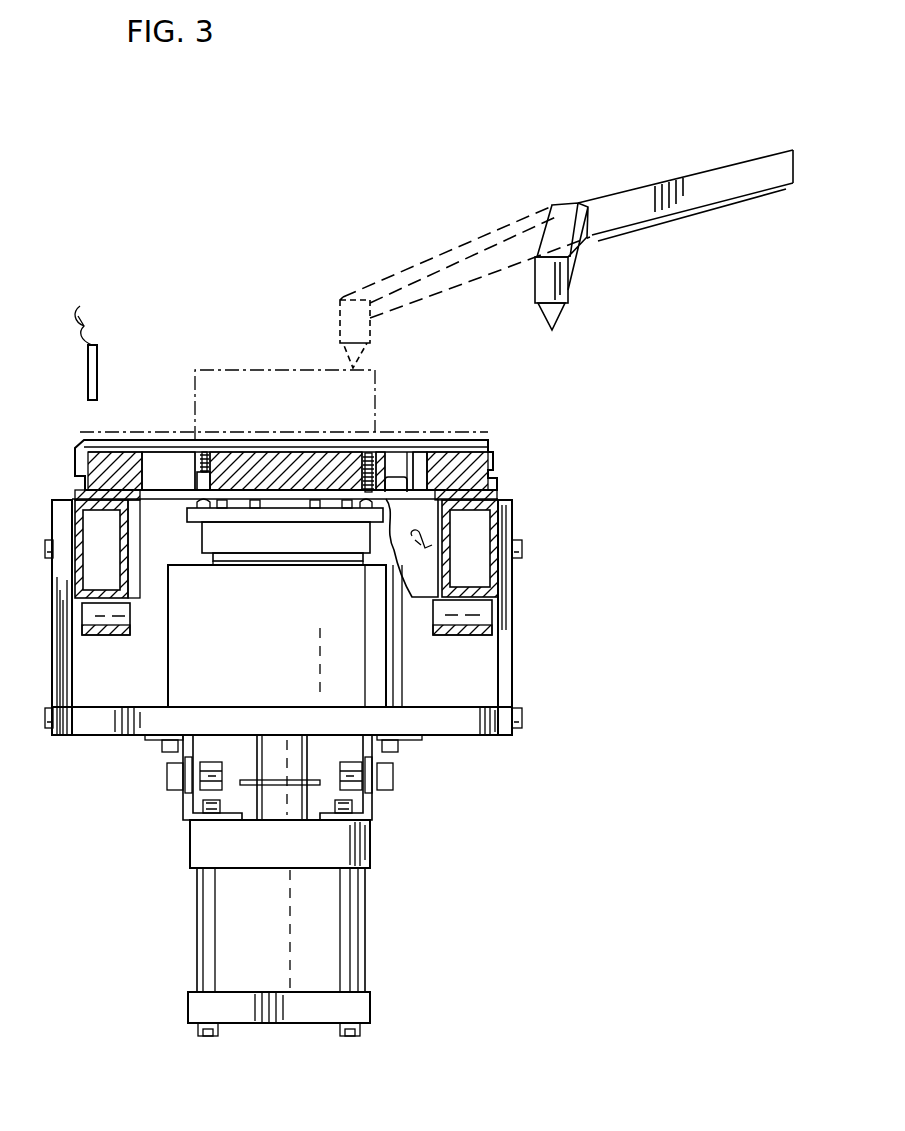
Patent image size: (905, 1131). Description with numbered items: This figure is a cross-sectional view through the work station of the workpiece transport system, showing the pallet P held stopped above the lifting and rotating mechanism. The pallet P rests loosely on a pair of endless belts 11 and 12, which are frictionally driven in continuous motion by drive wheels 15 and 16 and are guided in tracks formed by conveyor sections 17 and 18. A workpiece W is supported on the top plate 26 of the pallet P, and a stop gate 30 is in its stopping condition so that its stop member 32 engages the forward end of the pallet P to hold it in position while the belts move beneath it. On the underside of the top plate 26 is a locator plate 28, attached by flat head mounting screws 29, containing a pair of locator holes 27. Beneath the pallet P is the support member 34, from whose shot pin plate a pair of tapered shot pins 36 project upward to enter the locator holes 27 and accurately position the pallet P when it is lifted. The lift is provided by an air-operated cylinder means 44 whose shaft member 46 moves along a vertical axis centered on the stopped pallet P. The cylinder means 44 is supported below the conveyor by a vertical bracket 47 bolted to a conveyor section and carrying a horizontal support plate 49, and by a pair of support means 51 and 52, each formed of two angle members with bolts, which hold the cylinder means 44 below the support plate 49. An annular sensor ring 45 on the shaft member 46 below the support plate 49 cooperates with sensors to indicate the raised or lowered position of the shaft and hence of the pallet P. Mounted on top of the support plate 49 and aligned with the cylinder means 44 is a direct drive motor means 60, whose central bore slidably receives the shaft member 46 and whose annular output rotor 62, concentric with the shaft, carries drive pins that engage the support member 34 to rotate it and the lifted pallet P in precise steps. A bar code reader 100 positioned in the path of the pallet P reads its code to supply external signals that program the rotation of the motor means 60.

The bar code reader 100 is at (97, 357).
The workpiece W is at (228, 370).
The pallet P is at (487, 430).
The top plate 26 is at (313, 453).
The locator holes 27 is at (192, 485).
The locator plate 28 is at (265, 468).
The flat head mounting screws 29 is at (200, 450).
The stop member 32 is at (397, 477).
The endless belt 12 is at (496, 490).
The endless belt 11 is at (65, 497).
The conveyor section 17 is at (77, 560).
The drive wheel 15 is at (128, 618).
The conveyor section 18 is at (493, 580).
The drive wheel 16 is at (437, 617).
The support member 34 is at (197, 520).
The shot pins 36 is at (208, 505).
The output rotor 62 is at (220, 555).
The direct drive motor means 60 is at (283, 665).
The stop gate 30 is at (430, 573).
The vertical bracket 47 is at (62, 690).
The support plate 49 is at (480, 722).
The support means 51 is at (179, 814).
The support means 52 is at (396, 802).
The shaft member 46 is at (285, 743).
The sensor ring 45 is at (290, 790).
The air-operated cylinder means 44 is at (323, 950).